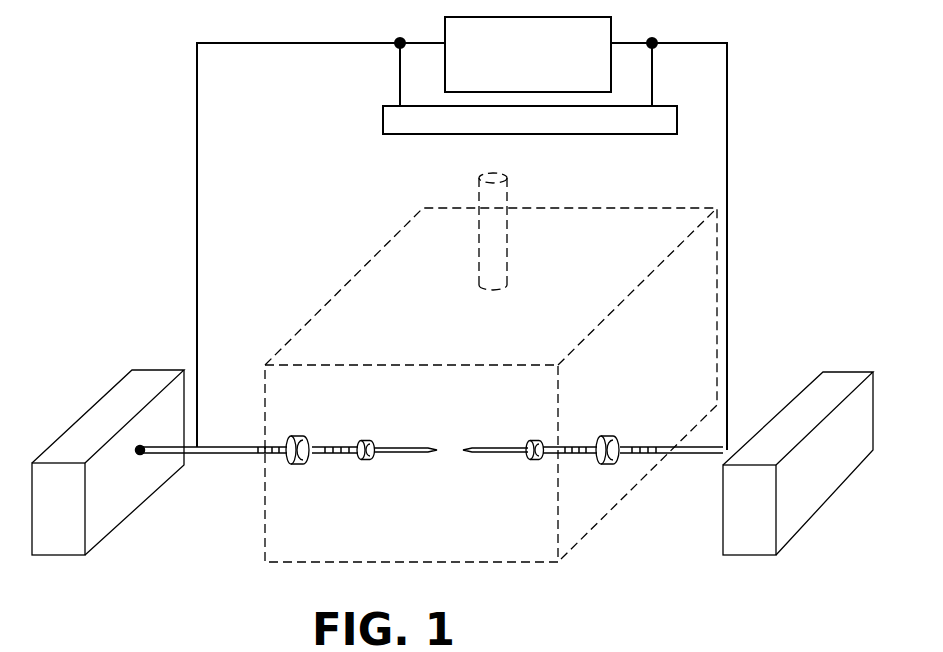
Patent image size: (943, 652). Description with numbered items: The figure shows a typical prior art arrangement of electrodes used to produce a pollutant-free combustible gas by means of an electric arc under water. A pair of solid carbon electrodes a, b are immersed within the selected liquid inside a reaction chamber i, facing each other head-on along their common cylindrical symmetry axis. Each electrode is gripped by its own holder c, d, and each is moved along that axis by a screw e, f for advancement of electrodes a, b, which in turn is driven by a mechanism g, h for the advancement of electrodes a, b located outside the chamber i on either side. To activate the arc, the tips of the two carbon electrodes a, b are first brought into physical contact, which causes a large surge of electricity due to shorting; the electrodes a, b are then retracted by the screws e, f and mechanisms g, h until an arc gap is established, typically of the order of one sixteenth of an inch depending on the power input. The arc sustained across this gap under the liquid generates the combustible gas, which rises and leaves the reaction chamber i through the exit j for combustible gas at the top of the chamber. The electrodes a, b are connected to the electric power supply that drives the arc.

The carbon electrode a is at (423, 455).
The carbon electrode b is at (482, 455).
The holder of electrode a c is at (365, 463).
The holder of electrode b d is at (538, 462).
The screw for advancement of electrode a e is at (263, 452).
The screw for advancement of electrode b f is at (637, 456).
The mechanism for the advancement of electrode a g is at (57, 549).
The mechanism for the advancement of electrode b h is at (748, 550).
The reaction chamber i is at (688, 307).
The exit of combustible gas from chamber j is at (508, 186).